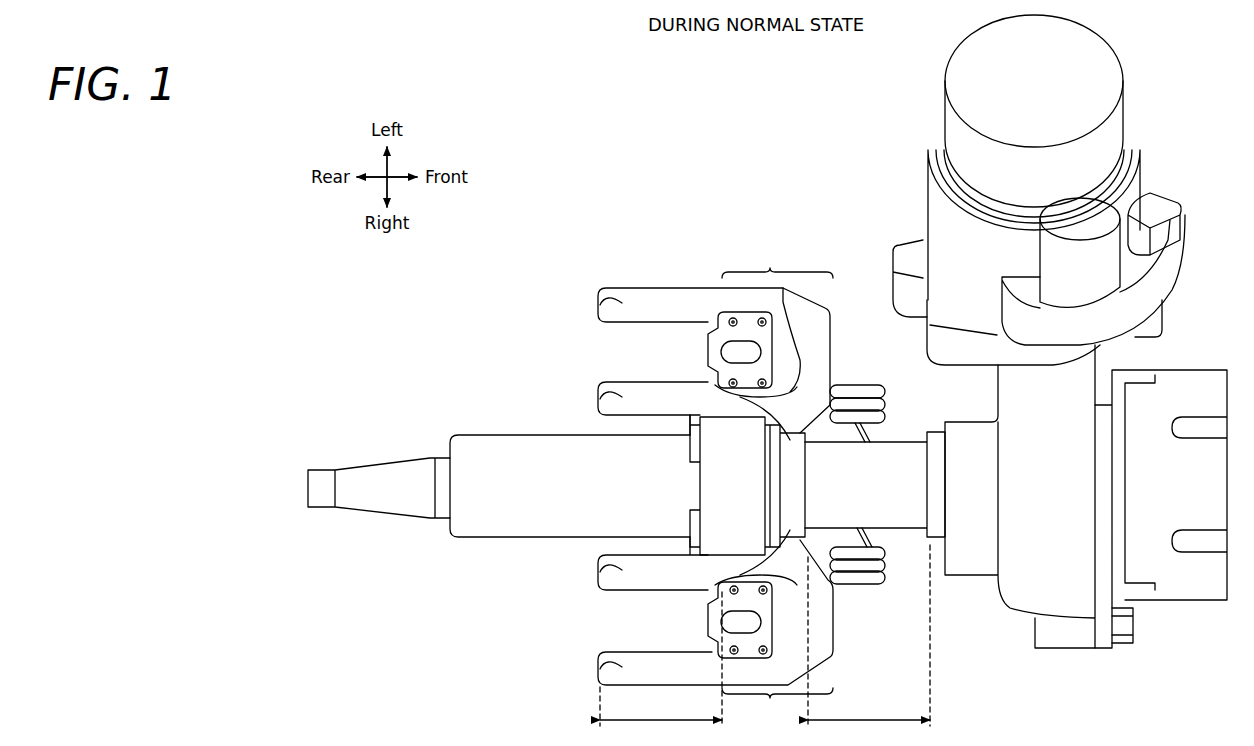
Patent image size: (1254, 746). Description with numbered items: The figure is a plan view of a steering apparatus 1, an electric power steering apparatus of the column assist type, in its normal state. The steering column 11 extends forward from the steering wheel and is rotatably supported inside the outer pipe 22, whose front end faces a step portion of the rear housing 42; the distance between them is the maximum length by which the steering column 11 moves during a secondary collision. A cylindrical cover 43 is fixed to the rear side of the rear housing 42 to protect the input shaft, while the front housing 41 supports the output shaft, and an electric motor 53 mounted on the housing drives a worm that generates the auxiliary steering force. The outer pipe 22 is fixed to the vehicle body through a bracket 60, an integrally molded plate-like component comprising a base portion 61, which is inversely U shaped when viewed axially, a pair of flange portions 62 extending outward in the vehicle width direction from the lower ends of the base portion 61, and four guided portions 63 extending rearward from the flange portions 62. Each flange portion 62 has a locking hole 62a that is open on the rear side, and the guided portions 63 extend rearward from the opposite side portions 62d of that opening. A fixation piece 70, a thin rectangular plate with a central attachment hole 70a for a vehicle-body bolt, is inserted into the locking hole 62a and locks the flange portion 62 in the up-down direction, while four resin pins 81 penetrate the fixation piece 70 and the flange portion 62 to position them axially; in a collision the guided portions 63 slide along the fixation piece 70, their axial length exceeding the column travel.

The steering apparatus 1 is at (745, 177).
The steering column 11 is at (378, 480).
The outer pipe 22 is at (485, 450).
The front housing 41 is at (1107, 638).
The rear housing 42 is at (1039, 353).
The cylindrical cover 43 is at (897, 463).
The electric motor 53 is at (1085, 77).
The bracket 60 is at (607, 488).
The base portion 61 is at (720, 497).
The flange portion 62 is at (720, 481).
The locking hole 62a is at (738, 372).
The opposite side portions 62d is at (725, 305).
The guided portion 63 is at (598, 302).
The fixation piece 70 is at (710, 350).
The attachment hole 70a is at (712, 370).
The resin pin 81 is at (766, 322).